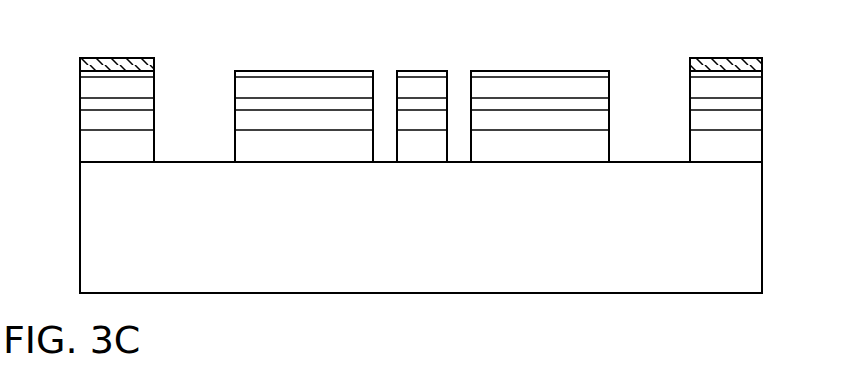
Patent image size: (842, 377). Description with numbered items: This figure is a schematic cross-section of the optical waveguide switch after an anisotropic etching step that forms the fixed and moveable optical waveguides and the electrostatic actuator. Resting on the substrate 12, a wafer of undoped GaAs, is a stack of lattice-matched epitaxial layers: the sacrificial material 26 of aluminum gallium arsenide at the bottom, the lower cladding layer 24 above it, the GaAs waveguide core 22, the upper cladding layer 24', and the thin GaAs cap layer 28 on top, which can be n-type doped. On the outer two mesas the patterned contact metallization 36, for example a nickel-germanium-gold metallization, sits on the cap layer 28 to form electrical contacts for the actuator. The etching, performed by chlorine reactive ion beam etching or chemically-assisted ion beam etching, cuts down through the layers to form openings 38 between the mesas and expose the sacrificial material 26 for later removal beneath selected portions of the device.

The substrate 12 is at (137, 256).
The waveguide core 22 is at (763, 106).
The lower cladding layer 24 is at (450, 129).
The upper cladding layer 24' is at (453, 84).
The sacrificial material 26 is at (80, 146).
The cap layer 28 is at (80, 72).
The contact metallization 36 is at (123, 58).
The trench opening 38 is at (194, 75).